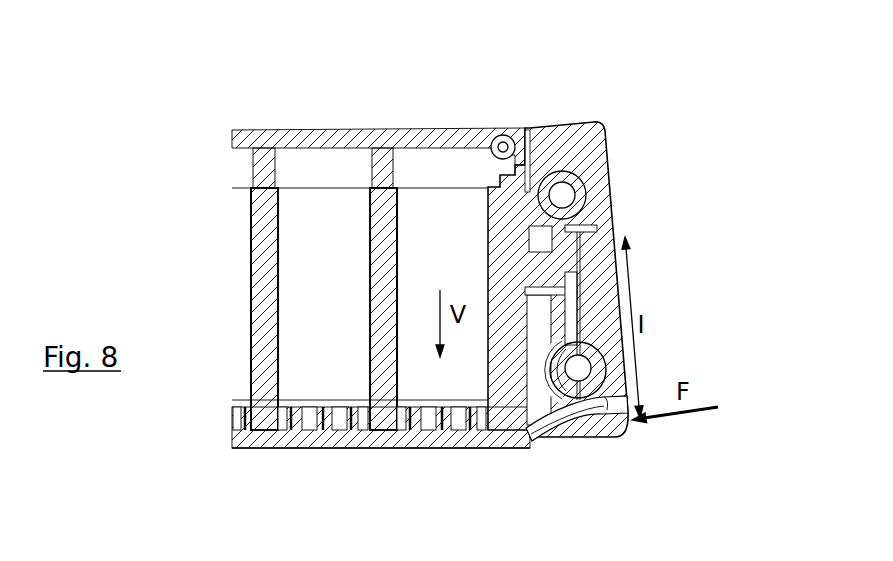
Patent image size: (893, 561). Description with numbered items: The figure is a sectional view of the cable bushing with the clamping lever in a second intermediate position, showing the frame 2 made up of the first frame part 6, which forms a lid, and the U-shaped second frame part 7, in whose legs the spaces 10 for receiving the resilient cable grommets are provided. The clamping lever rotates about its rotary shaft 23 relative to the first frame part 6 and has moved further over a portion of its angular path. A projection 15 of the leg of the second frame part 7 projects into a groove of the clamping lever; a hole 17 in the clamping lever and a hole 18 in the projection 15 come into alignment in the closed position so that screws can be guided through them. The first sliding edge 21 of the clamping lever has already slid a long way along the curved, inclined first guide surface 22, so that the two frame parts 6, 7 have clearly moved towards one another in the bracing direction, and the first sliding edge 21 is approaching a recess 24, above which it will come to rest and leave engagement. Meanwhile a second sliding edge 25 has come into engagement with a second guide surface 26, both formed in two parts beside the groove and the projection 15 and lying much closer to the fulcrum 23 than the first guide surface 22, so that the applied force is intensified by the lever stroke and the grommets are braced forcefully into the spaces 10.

The frame 2 is at (203, 154).
The first frame part 6 is at (318, 140).
The second frame part 7 is at (295, 442).
The spaces 10 is at (303, 250).
The projection 15 is at (568, 312).
The hole 17 is at (578, 190).
The hole 18 is at (562, 195).
The first sliding edge 21 is at (557, 440).
The first guide surface 22 is at (585, 428).
The rotary shaft 23 is at (500, 142).
The recess 24 is at (538, 440).
The second sliding edge 25 is at (542, 248).
The second guide surface 26 is at (580, 228).